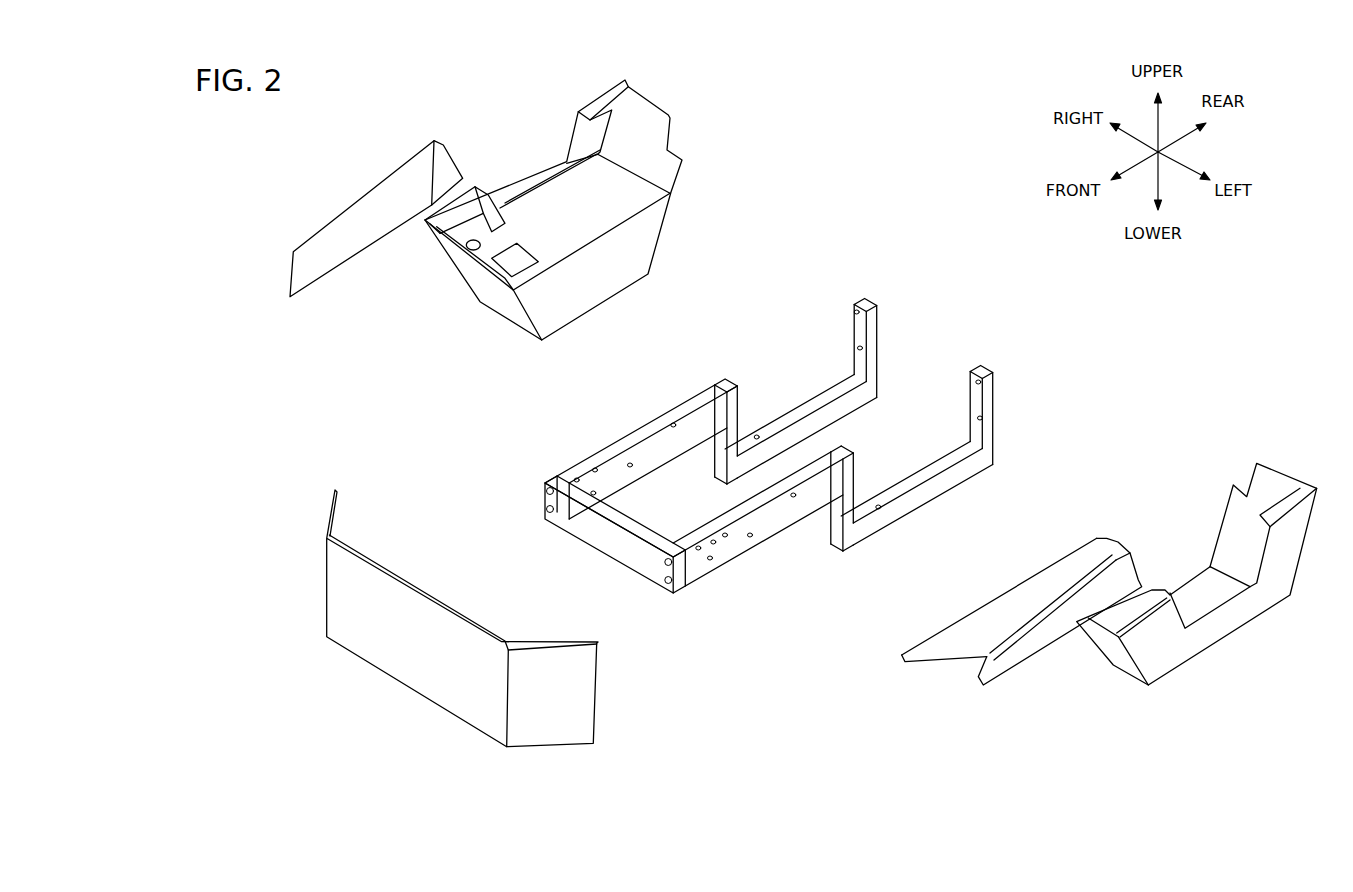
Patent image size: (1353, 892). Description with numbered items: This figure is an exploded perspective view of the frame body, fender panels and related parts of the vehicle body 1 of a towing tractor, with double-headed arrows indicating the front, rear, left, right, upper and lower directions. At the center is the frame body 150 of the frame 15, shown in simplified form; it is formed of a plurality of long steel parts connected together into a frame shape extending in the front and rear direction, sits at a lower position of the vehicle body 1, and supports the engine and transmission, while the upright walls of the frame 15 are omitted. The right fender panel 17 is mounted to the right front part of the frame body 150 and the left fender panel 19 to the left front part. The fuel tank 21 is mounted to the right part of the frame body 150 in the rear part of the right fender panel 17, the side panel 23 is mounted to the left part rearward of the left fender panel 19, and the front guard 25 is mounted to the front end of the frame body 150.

The vehicle body 1 is at (690, 664).
The frame 15 is at (769, 464).
The frame body 150 is at (777, 517).
The right fender panel 17 is at (360, 206).
The left fender panel 19 is at (1035, 637).
The fuel tank 21 is at (600, 287).
The side panel 23 is at (1220, 622).
The front guard 25 is at (408, 668).